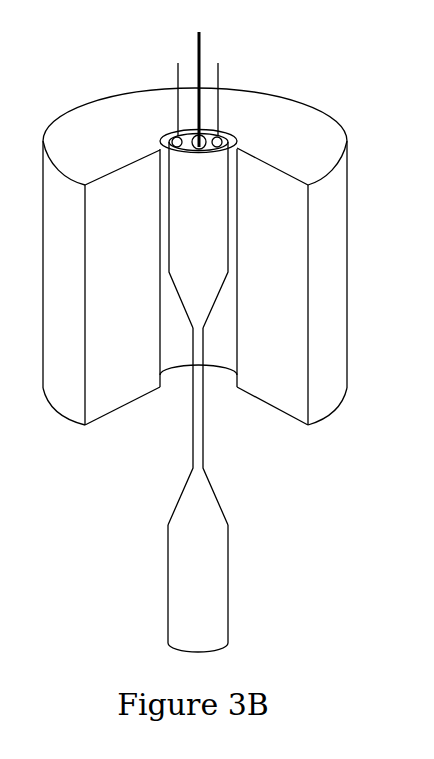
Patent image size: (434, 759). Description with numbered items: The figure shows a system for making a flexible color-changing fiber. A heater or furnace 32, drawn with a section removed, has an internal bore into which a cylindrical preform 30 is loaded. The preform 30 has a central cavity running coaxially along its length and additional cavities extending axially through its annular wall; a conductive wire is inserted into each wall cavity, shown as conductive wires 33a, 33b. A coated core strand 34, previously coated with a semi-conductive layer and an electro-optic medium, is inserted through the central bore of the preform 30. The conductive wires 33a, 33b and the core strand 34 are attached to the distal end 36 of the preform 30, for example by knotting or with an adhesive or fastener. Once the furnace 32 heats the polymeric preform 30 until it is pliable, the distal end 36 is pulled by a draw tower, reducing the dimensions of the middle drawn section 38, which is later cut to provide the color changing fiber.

The cylindrical preform 30 is at (187, 200).
The furnace 32 is at (89, 143).
The conductive wire 33a is at (218, 80).
The conductive wire 33b is at (178, 76).
The coated core strand 34 is at (199, 52).
The distal end 36 is at (228, 628).
The middle drawn section 38 is at (203, 422).